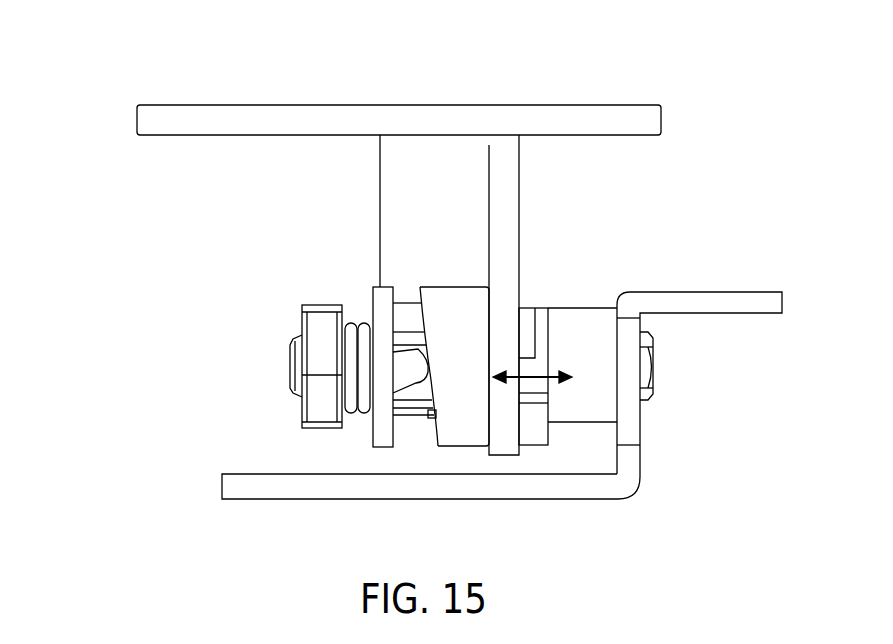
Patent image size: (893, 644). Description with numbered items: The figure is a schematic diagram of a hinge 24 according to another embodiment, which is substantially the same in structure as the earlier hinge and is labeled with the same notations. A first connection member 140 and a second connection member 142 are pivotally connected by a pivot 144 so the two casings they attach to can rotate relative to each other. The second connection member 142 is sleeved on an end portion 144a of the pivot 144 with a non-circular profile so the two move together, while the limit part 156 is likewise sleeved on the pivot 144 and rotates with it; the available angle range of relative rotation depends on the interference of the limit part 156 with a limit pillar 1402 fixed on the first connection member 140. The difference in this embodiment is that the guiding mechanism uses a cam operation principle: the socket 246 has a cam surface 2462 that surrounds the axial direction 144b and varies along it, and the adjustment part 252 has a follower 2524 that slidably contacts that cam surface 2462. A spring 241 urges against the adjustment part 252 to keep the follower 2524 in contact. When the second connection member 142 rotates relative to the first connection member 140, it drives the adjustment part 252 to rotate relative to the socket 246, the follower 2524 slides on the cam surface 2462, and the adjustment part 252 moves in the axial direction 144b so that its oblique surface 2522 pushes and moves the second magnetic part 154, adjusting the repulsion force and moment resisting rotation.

The hinge 24 is at (172, 70).
The first connection member 140 is at (193, 130).
The limit pillar 1402 is at (527, 316).
The second connection member 142 is at (246, 492).
The pivot 144 is at (372, 354).
The end portion 144a is at (655, 373).
The axial direction 144b is at (555, 374).
The second magnetic part 154 is at (404, 415).
The limit part 156 is at (533, 438).
The spring 241 is at (368, 322).
The socket 246 is at (462, 440).
The cam surface 2462 is at (438, 437).
The adjustment part 252 is at (368, 434).
The oblique surface 2522 is at (430, 420).
The follower 2524 is at (403, 368).